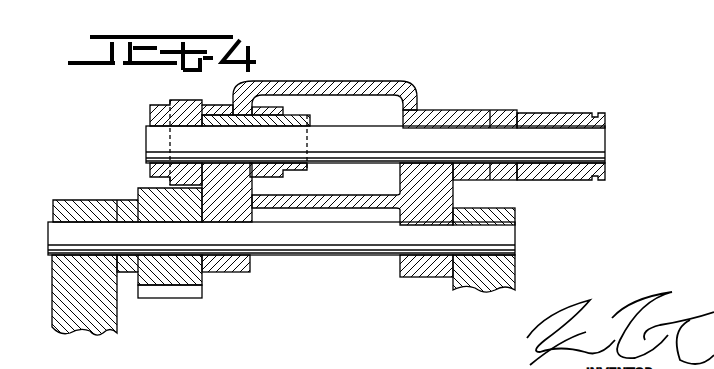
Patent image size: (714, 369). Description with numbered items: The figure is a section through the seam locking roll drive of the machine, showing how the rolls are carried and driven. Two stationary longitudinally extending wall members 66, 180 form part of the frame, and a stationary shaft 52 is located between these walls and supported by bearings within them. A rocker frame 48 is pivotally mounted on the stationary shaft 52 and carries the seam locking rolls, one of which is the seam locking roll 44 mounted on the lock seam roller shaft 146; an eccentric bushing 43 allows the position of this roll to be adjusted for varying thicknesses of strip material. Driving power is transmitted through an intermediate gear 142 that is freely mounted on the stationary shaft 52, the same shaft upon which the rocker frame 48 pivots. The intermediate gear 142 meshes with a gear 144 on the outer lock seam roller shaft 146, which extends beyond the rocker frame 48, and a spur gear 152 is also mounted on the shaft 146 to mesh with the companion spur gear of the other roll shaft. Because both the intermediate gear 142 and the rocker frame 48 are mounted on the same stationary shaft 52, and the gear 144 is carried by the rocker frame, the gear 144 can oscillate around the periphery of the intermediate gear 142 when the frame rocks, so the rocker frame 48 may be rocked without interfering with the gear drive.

The eccentric bushing 43 is at (217, 118).
The seam locking roll 44 is at (556, 112).
The rocker frame 48 is at (432, 110).
The stationary shaft 52 is at (513, 233).
The wall member 66 is at (503, 250).
The intermediate gear 142 is at (202, 287).
The gear 144 is at (170, 100).
The lock seam roller shaft 146 is at (595, 142).
The spur gear 152 is at (280, 110).
The wall member 180 is at (58, 327).